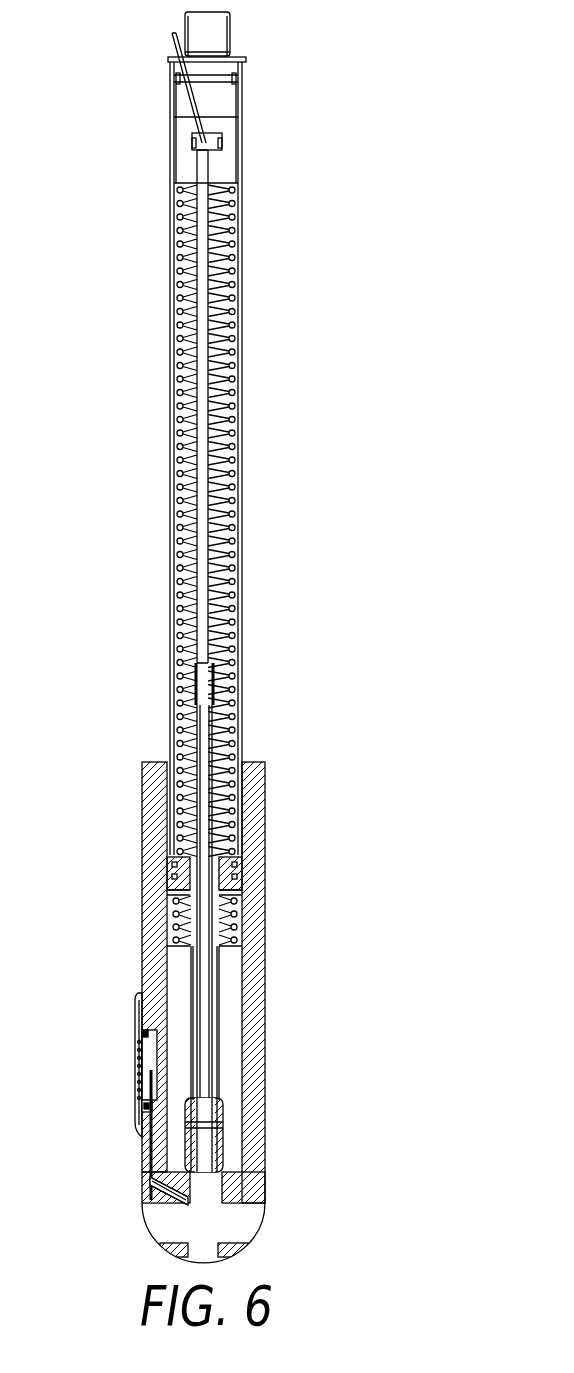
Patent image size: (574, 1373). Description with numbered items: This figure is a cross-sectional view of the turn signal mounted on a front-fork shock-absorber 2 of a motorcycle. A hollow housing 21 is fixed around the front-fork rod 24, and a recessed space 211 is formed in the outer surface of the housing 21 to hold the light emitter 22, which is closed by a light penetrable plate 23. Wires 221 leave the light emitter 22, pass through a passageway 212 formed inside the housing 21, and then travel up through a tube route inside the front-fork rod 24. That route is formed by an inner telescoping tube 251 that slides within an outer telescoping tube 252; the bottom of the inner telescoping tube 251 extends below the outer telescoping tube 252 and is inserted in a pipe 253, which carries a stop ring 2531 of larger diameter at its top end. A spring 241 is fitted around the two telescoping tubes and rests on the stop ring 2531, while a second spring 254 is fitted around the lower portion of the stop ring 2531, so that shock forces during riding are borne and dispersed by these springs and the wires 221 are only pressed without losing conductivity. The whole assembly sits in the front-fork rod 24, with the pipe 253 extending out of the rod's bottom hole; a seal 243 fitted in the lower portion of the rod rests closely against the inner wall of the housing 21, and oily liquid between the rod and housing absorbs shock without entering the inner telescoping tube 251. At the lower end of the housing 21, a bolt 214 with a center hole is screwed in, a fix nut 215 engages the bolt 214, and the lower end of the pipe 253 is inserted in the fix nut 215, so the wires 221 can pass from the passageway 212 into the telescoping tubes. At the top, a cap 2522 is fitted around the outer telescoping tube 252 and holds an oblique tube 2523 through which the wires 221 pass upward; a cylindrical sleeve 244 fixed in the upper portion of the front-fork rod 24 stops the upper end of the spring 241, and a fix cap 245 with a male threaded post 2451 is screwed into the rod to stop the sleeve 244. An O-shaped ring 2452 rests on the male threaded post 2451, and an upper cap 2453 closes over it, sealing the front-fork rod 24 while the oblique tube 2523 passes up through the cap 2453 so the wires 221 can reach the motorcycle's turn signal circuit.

The front-fork shock-absorber 2 is at (255, 545).
The hollow housing 21 is at (257, 877).
The recessed space 211 is at (155, 1040).
The passageway 212 is at (160, 1192).
The bolt 214 is at (222, 1192).
The fix nut 215 is at (223, 1124).
The light emitter 22 is at (140, 1057).
The wires 221 is at (152, 1204).
The light penetrable plate 23 is at (145, 1106).
The front-fork rod 24 is at (242, 388).
The spring 241 is at (242, 327).
The seal 243 is at (237, 918).
The cylindrical sleeve 244 is at (226, 159).
The fix cap 245 is at (237, 40).
The male threaded post 2451 is at (222, 100).
The O-shaped ring 2452 is at (240, 80).
The upper cap 2453 is at (242, 59).
The inner telescoping tube 251 is at (213, 727).
The outer telescoping tube 252 is at (210, 445).
The cap 2522 is at (222, 138).
The oblique tube 2523 is at (190, 124).
The pipe 253 is at (222, 1014).
The stop ring 2531 is at (233, 862).
The spring 254 is at (236, 901).